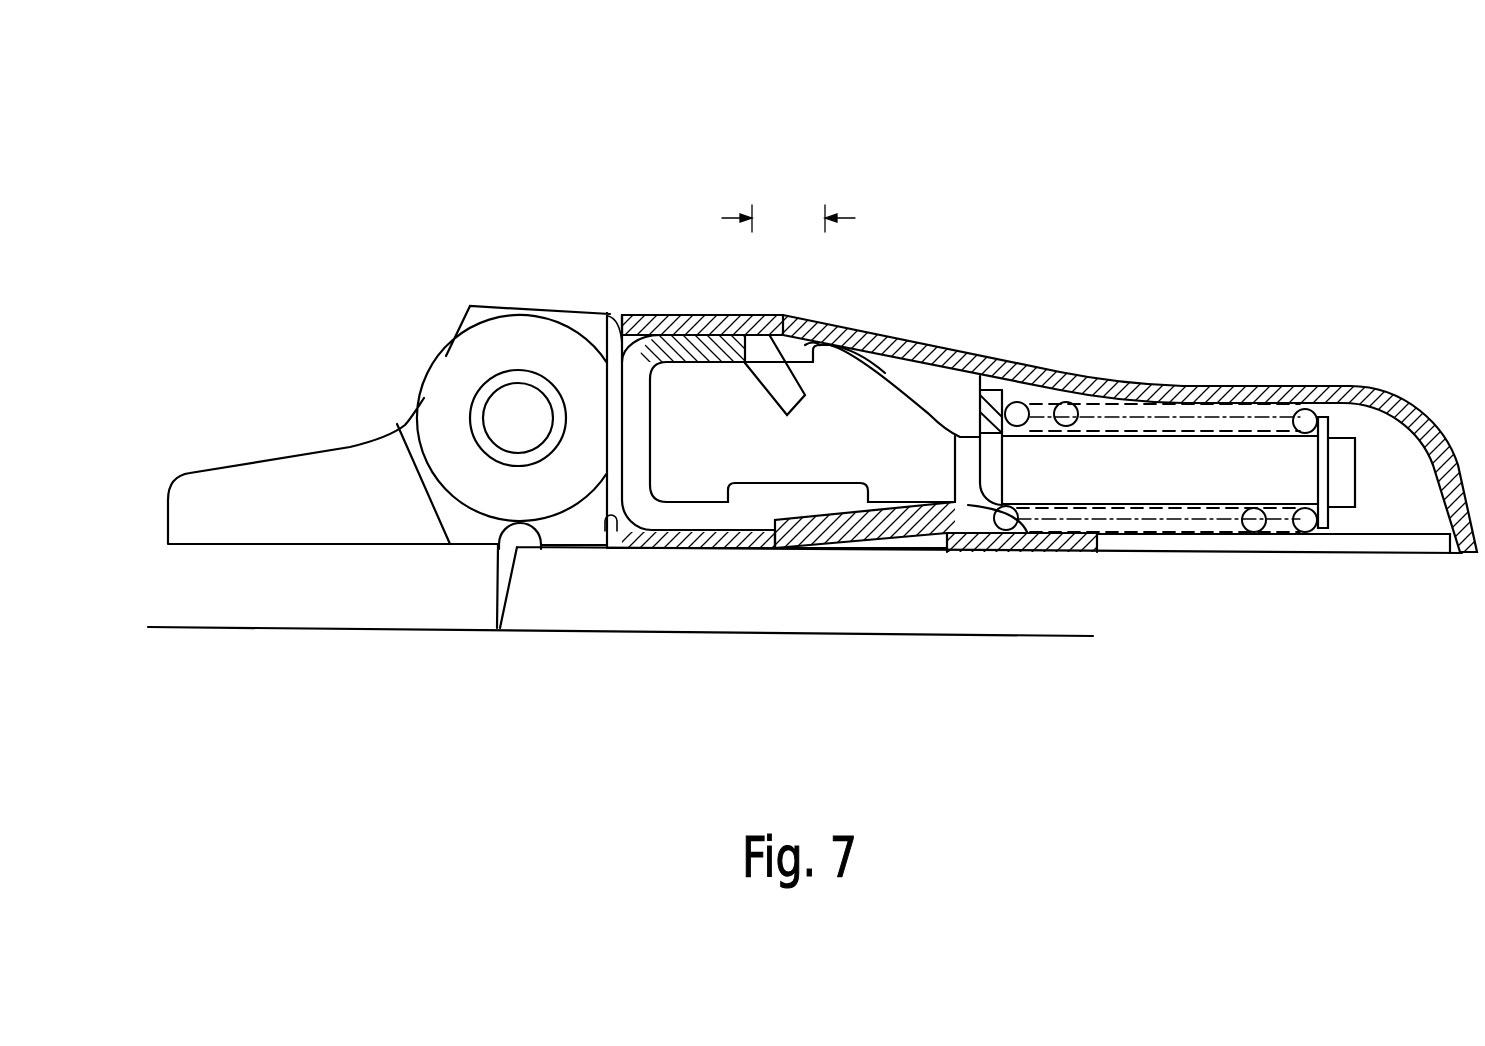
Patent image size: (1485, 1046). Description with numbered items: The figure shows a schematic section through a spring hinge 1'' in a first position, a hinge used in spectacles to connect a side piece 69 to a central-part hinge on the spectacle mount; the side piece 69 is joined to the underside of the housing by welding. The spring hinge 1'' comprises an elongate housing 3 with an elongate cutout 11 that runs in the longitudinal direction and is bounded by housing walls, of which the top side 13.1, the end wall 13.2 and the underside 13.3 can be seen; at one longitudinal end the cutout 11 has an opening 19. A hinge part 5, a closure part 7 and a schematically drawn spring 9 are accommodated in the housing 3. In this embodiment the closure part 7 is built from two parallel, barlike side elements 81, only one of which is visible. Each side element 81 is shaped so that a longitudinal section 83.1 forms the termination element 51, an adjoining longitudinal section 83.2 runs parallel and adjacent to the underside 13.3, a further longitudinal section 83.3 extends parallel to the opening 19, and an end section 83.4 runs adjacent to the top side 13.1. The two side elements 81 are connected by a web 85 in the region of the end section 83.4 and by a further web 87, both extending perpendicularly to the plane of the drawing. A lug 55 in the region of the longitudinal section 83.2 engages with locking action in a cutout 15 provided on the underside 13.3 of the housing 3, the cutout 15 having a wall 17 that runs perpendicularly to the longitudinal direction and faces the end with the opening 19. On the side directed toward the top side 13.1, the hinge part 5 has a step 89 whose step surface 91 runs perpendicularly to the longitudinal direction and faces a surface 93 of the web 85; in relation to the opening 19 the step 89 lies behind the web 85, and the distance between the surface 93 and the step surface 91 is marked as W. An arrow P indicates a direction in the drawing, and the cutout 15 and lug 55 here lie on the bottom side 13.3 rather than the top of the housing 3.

The spring hinge 1'' is at (521, 125).
The spring-hinge housing 3 is at (1160, 383).
The hinge part 5 is at (888, 372).
The closure part 7 is at (690, 513).
The spring 9 is at (1305, 525).
The cutout 11 is at (1415, 531).
The housing wall 13.1 is at (1278, 383).
The housing wall 13.2 is at (1430, 420).
The housing wall 13.3 is at (1170, 553).
The cutout 15 is at (940, 540).
The wall 17 is at (757, 537).
The opening 19 is at (612, 317).
The termination element 51 is at (988, 372).
The lug 55 is at (822, 533).
The side piece 69 is at (532, 605).
The side element 81 is at (655, 340).
The longitudinal section 83.1 is at (1005, 463).
The longitudinal section 83.2 is at (662, 513).
The longitudinal section 83.3 is at (632, 463).
The end section 83.4 is at (780, 313).
The web 85 is at (705, 322).
The further web 87 is at (1032, 388).
The step 89 is at (870, 408).
The step surface 91 is at (812, 337).
The surface 93 is at (748, 345).
The direction arrow P is at (295, 233).
The distance W is at (788, 214).